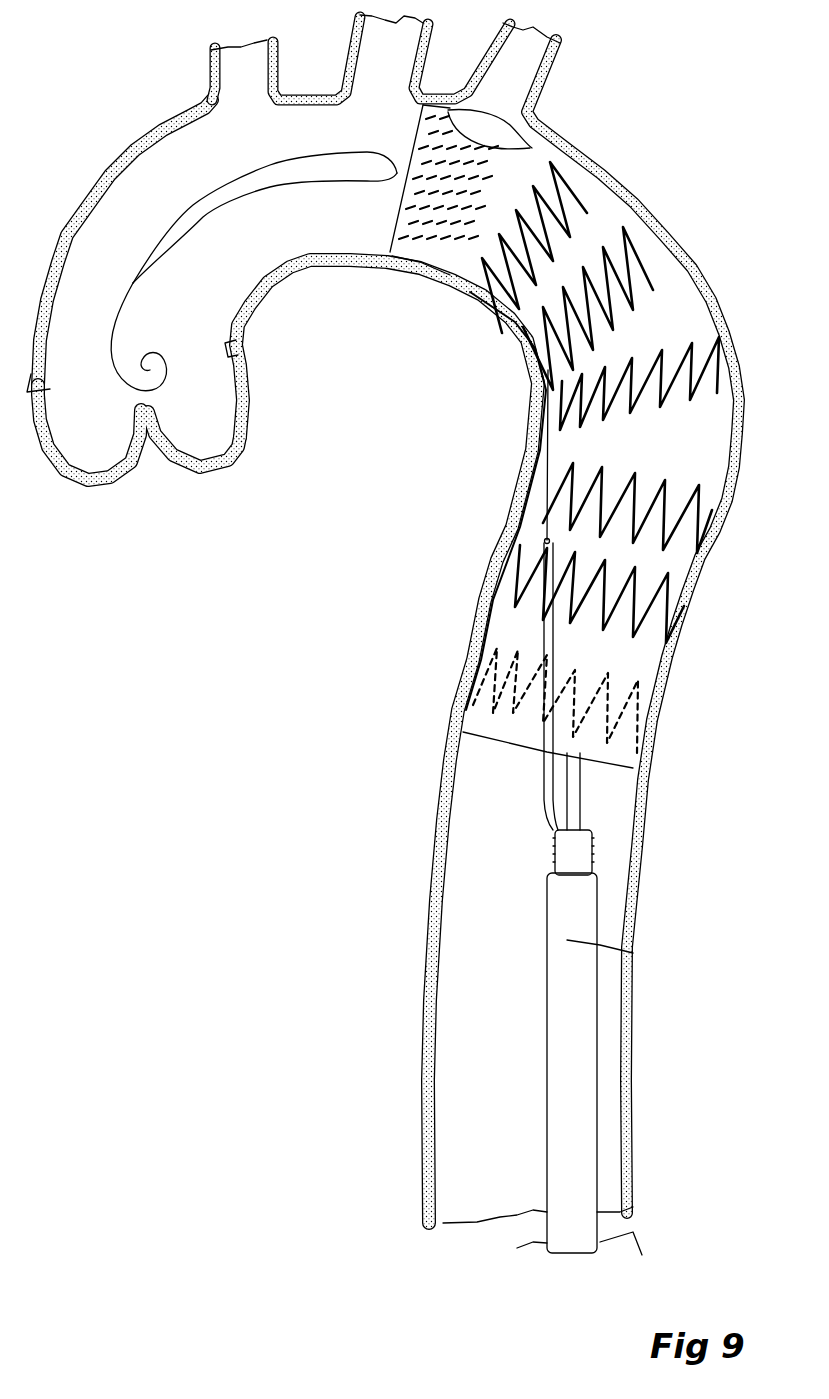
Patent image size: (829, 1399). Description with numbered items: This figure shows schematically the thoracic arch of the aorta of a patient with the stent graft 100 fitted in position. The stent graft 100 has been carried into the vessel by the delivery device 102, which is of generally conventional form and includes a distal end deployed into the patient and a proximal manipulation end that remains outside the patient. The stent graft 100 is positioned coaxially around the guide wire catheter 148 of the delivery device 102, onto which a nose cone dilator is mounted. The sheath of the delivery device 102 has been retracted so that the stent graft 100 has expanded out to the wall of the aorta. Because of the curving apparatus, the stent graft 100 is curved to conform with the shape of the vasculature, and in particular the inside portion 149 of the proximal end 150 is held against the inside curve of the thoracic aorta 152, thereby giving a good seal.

The stent graft 100 is at (677, 317).
The delivery device 102 is at (533, 1098).
The guide wire catheter 148 is at (573, 802).
The inside portion 149 is at (413, 270).
The proximal end 150 is at (397, 207).
The thoracic aorta 152 is at (400, 262).